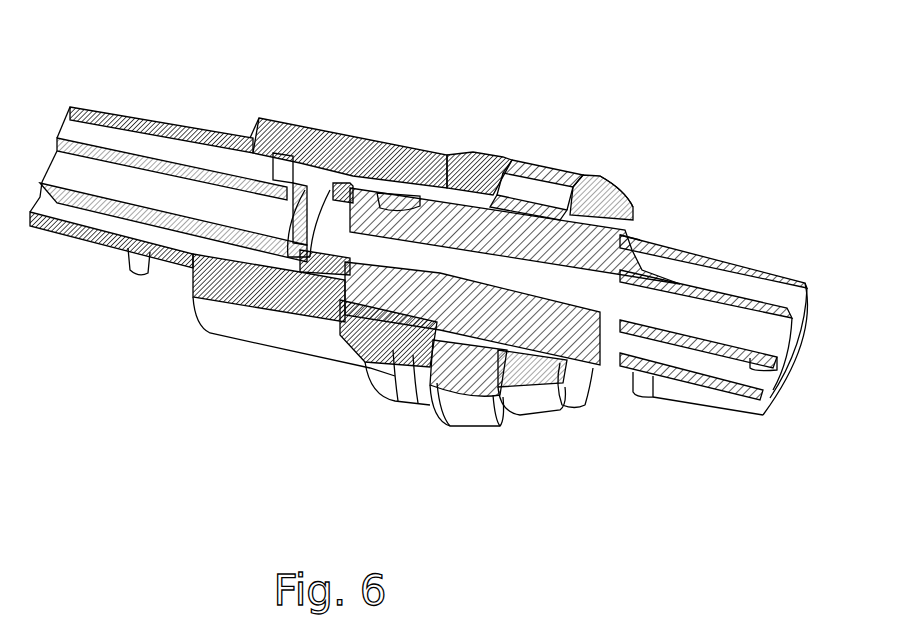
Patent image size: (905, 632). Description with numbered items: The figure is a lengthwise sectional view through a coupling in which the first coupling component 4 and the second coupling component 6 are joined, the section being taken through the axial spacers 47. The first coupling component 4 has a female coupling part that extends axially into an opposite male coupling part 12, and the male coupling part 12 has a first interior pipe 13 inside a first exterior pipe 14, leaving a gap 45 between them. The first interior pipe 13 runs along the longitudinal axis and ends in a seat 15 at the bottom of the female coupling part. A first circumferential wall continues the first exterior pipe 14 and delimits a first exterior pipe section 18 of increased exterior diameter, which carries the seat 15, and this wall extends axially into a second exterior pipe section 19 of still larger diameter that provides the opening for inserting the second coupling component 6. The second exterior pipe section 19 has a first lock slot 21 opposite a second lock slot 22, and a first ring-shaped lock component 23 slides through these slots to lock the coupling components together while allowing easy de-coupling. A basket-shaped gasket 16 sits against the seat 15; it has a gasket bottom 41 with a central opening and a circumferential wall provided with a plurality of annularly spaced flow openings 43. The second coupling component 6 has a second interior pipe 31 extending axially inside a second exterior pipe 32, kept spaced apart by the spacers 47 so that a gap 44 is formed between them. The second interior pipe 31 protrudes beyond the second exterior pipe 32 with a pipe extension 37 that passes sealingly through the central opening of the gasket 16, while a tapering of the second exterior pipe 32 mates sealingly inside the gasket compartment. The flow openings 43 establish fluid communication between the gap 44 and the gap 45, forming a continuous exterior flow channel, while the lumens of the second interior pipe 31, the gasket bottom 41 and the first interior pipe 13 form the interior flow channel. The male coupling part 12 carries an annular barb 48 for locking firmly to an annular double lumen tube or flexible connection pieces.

The first coupling component 4 is at (380, 157).
The second coupling component 6 is at (600, 180).
The male coupling part 12 is at (138, 270).
The first interior pipe 13 is at (95, 148).
The first exterior pipe 14 is at (157, 127).
The seat 15 is at (310, 258).
The gasket 16 is at (423, 203).
The first exterior pipe section 18 is at (295, 333).
The second exterior pipe section 19 is at (620, 185).
The first lock slot 21 is at (413, 387).
The second lock slot 22 is at (490, 153).
The first ring-shaped lock component 23 is at (463, 435).
The second interior pipe 31 is at (800, 283).
The second exterior pipe 32 is at (740, 262).
The pipe extension 37 is at (360, 337).
The gasket bottom 41 is at (352, 183).
The flow openings 43 is at (393, 203).
The gap 44 is at (700, 272).
The gap 45 is at (73, 215).
The spacers 47 is at (567, 213).
The annular barb 48 is at (195, 130).